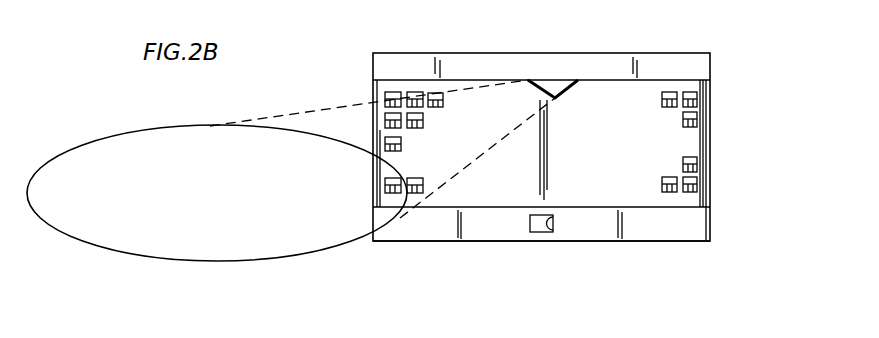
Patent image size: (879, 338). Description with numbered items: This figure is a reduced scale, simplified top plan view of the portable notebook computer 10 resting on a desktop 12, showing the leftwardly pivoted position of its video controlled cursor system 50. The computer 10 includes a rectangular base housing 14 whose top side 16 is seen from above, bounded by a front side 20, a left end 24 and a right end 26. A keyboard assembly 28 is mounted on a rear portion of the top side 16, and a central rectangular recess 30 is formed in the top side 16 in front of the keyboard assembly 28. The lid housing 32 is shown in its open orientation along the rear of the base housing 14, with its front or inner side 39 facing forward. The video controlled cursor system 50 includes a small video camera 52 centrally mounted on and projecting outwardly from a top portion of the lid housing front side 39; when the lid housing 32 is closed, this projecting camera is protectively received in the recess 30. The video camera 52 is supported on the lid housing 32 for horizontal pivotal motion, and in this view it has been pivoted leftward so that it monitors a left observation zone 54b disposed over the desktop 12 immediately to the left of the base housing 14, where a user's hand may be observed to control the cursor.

The portable notebook computer 10 is at (757, 68).
The desktop 12 is at (230, 202).
The base housing 14 is at (712, 121).
The top side 16 is at (642, 225).
The front side 20 is at (512, 243).
The left end 24 is at (375, 91).
The right end 26 is at (712, 194).
The keyboard assembly 28 is at (675, 118).
The central rectangular recess 30 is at (545, 216).
The lid housing 32 is at (580, 54).
The front side 39 is at (651, 82).
The video controlled cursor system 50 is at (545, 47).
The video camera 52 is at (560, 90).
The left observation zone 54b is at (215, 265).